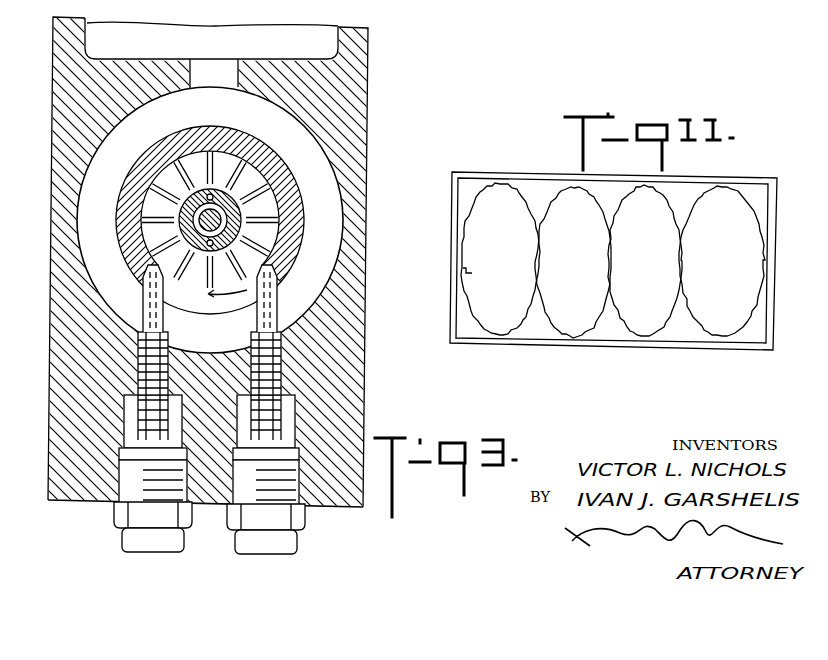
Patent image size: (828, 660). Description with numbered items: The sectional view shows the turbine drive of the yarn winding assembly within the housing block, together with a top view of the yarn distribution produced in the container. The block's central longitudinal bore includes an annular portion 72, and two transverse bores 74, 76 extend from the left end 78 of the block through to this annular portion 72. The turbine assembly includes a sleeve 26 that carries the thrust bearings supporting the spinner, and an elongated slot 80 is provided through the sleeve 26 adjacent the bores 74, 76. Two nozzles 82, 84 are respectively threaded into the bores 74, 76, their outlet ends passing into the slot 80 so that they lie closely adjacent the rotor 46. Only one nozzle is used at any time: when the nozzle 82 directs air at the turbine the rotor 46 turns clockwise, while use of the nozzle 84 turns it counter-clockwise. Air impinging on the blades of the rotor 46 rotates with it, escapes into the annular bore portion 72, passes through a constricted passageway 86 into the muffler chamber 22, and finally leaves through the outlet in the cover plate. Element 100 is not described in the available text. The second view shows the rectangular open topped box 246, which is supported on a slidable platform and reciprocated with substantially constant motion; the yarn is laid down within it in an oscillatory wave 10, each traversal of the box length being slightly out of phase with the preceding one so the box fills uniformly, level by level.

In FIG. 3, the muffler chamber 22 is at (106, 32).
In FIG. 3, the inlet passage 100 is at (223, 1).
In FIG. 3, the constricted passageway 86 is at (222, 71).
In FIG. 3, the annular portion 72 is at (270, 107).
In FIG. 3, the rotor 46 is at (251, 195).
In FIG. 3, the sleeve 26 is at (280, 205).
In FIG. 3, the elongated slot 80 is at (140, 258).
In FIG. 3, the nozzle 82 is at (138, 364).
In FIG. 3, the nozzle 84 is at (275, 367).
In FIG. 3, the transverse bore 74 is at (124, 421).
In FIG. 3, the transverse bore 76 is at (288, 432).
In FIG. 3, the left end 78 is at (78, 501).
In FIG. 11, the rectangular open topped box 246 is at (606, 348).
In FIG. 11, the signal waveform 10 is at (667, 330).